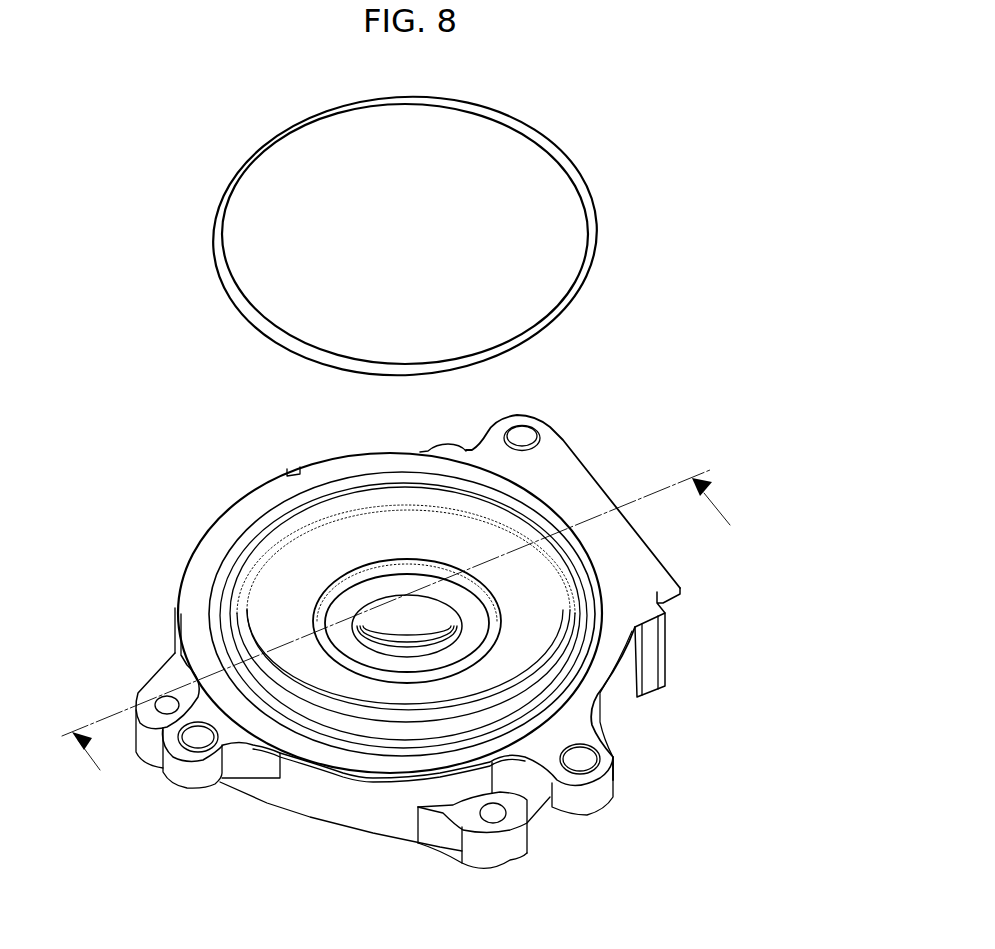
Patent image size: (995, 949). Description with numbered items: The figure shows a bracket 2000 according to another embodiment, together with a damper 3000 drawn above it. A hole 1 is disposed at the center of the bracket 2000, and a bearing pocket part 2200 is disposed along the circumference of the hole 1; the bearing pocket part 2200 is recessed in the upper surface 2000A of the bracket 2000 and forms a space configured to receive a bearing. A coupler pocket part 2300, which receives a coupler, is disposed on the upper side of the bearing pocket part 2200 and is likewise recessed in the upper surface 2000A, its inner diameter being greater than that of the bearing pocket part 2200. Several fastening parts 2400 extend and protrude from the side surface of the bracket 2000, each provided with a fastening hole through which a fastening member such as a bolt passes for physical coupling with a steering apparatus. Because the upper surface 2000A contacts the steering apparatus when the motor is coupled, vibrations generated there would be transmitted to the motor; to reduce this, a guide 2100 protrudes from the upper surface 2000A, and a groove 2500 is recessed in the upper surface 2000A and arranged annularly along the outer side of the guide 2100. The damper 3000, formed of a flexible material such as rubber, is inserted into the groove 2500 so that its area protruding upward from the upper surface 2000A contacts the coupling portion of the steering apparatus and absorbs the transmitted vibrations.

The hole 1 is at (414, 639).
The bracket 2000 is at (577, 510).
The upper surface 2000A is at (536, 484).
The guide 2100 is at (317, 497).
The bearing pocket part 2200 is at (447, 622).
The coupler pocket part 2300 is at (346, 600).
The fastening part 2400 is at (582, 765).
The groove 2500 is at (217, 623).
The damper 3000 is at (598, 262).